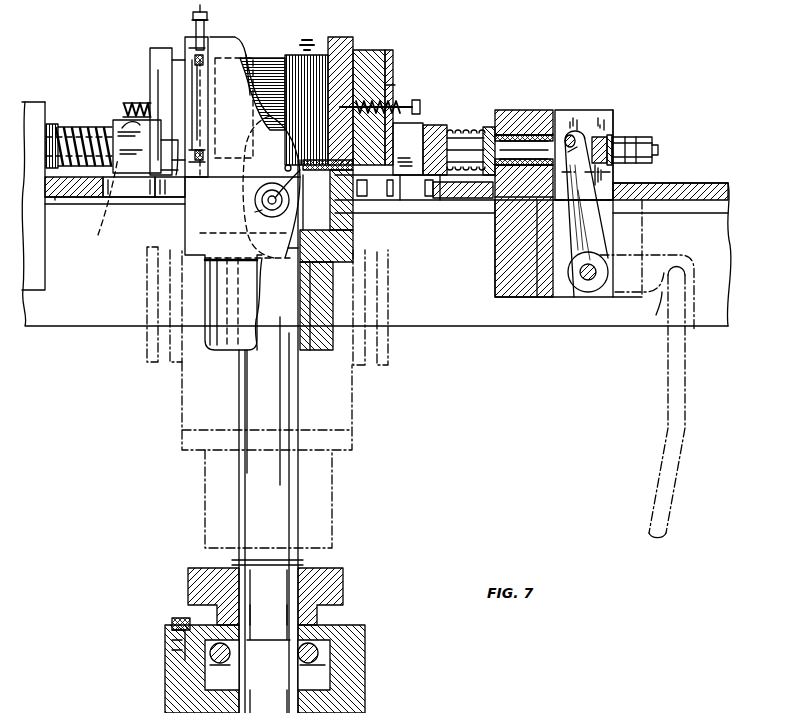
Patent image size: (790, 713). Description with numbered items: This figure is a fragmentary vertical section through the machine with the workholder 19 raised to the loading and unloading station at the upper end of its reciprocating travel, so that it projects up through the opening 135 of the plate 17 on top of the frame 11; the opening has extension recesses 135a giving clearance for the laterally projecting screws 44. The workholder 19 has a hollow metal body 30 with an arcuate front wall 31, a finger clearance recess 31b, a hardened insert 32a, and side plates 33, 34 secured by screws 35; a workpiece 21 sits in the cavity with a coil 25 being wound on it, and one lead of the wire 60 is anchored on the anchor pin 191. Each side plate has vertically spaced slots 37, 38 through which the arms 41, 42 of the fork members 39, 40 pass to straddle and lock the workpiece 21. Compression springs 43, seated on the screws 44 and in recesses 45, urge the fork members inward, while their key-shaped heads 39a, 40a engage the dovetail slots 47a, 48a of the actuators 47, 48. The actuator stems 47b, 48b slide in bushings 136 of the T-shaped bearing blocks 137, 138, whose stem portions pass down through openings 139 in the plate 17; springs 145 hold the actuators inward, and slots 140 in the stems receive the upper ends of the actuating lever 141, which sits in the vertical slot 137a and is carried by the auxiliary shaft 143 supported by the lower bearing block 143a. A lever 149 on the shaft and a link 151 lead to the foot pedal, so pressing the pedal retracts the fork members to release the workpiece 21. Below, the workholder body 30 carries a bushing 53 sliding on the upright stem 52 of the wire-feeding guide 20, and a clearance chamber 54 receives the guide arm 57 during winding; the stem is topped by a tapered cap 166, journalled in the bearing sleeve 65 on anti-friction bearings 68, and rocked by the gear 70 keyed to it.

The frame 11 is at (82, 327).
The plate 17 is at (700, 184).
The workholder 19 is at (352, 405).
The wire-feeding guide 20 is at (350, 245).
The workpiece 21 is at (278, 45).
The coil 25 is at (304, 54).
The hollow metal body 30 is at (183, 222).
The front wall 31 is at (236, 47).
The recess 31b is at (258, 60).
The hardened arcuate insert 32a is at (390, 85).
The side plate 33 is at (345, 44).
The side plate 34 is at (205, 73).
The screw 35 is at (187, 45).
The slot 37 is at (395, 142).
The slot 38 is at (368, 50).
The fork member 39 is at (388, 52).
The key-shaped head 39a is at (447, 200).
The fork member 40 is at (166, 50).
The key-shaped head 40a is at (156, 82).
The arm 41 is at (158, 198).
The arm 42 is at (194, 50).
The compression spring 43 is at (128, 93).
The screw 44 is at (122, 113).
The recess 45 is at (387, 103).
The actuator 47 is at (448, 126).
The dovetail slot 47a is at (405, 200).
The stem portion 47b is at (530, 135).
The actuator 48 is at (178, 198).
The dovetail slot 48a is at (90, 199).
The stem portion 48b is at (138, 122).
The upright cylindrical stem 52 is at (292, 404).
The bushing 53 is at (312, 358).
The clearance chamber 54 is at (276, 293).
The guide arm 57 is at (256, 212).
The wire 60 is at (280, 182).
The bearing sleeve 65 is at (365, 640).
The anti-friction bearing 68 is at (325, 655).
The gear 70 is at (343, 590).
The opening 135 is at (370, 200).
The extension recess 135a is at (494, 232).
The bushing 136 is at (512, 100).
The bearing block 137 is at (583, 100).
The vertical slot 137a is at (605, 135).
The bearing block 138 is at (36, 101).
The opening 139 is at (640, 185).
The slot 140 is at (622, 135).
The actuating lever 141 is at (612, 232).
The auxiliary shaft 143 is at (575, 285).
The bearing block 143a is at (688, 245).
The compression spring 145 is at (58, 199).
The lever 149 is at (655, 316).
The link 151 is at (680, 403).
The tapered cap 166 is at (262, 130).
The anchor pin 191 is at (196, 20).